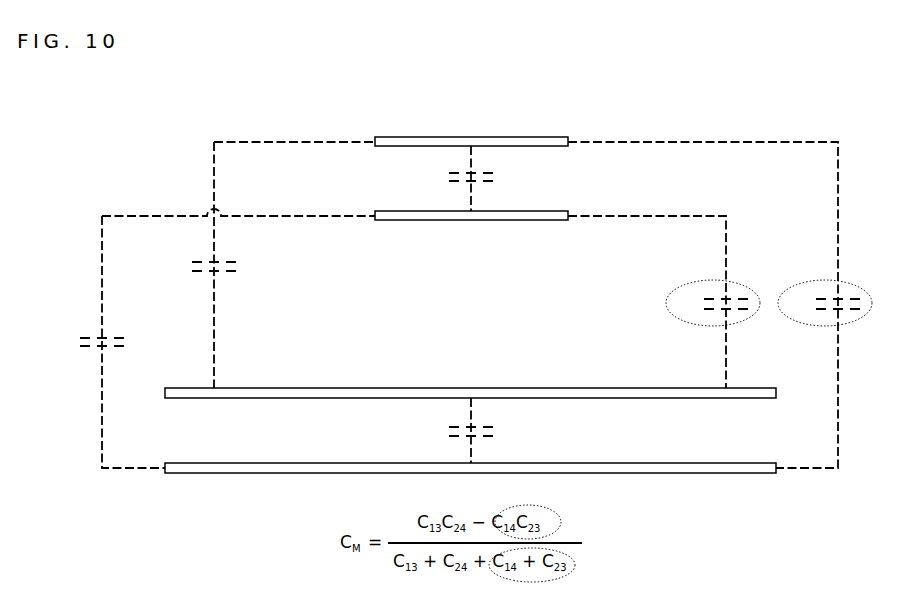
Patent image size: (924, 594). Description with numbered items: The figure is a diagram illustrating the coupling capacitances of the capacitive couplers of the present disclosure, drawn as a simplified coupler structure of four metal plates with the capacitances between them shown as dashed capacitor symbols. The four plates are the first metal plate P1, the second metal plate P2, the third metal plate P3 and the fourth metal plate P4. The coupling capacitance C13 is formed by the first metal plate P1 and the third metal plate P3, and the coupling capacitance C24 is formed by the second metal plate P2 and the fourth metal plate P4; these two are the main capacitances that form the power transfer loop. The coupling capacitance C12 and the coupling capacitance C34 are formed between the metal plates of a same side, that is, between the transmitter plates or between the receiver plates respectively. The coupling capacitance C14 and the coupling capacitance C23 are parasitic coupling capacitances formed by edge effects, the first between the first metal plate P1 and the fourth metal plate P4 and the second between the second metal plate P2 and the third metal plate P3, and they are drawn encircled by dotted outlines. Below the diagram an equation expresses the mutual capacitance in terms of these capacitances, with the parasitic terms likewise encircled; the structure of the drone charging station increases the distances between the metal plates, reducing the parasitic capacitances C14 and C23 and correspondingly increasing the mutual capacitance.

The first metal plate P1 is at (470, 457).
The second metal plate P2 is at (470, 382).
The third metal plate P3 is at (471, 203).
The fourth metal plate P4 is at (471, 129).
The coupling capacitance C12 is at (87, 344).
The coupling capacitance C13 is at (455, 430).
The parasitic coupling capacitance C14 is at (825, 303).
The parasitic coupling capacitance C23 is at (713, 303).
The coupling capacitance C24 is at (199, 269).
The coupling capacitance C34 is at (455, 178).